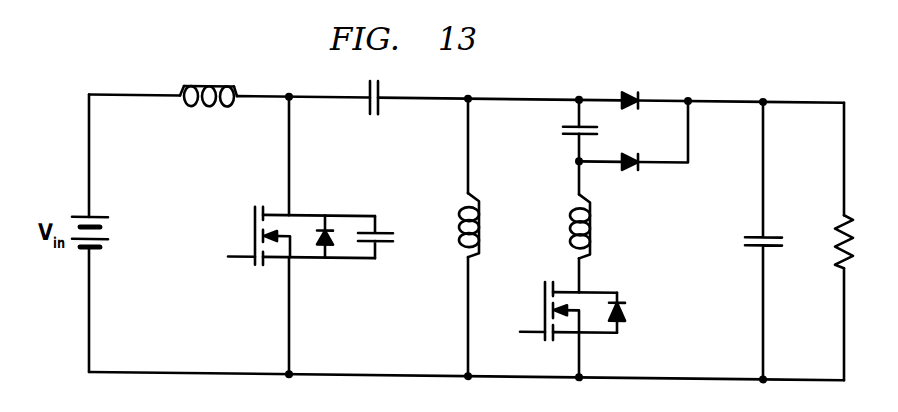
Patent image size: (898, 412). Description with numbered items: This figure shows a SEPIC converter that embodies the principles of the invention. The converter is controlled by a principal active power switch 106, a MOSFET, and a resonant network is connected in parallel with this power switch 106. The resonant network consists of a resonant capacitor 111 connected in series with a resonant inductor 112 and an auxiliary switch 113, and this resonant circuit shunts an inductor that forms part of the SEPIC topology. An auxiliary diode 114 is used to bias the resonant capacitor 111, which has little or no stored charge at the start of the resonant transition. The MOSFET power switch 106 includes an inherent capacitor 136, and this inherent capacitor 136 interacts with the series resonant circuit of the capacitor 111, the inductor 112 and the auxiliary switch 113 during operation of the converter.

The principal active power switch 106 is at (301, 221).
The inherent capacitor 136 is at (394, 237).
The resonant capacitor 111 is at (563, 134).
The auxiliary diode 114 is at (633, 131).
The resonant inductor 112 is at (561, 243).
The auxiliary switch 113 is at (572, 297).